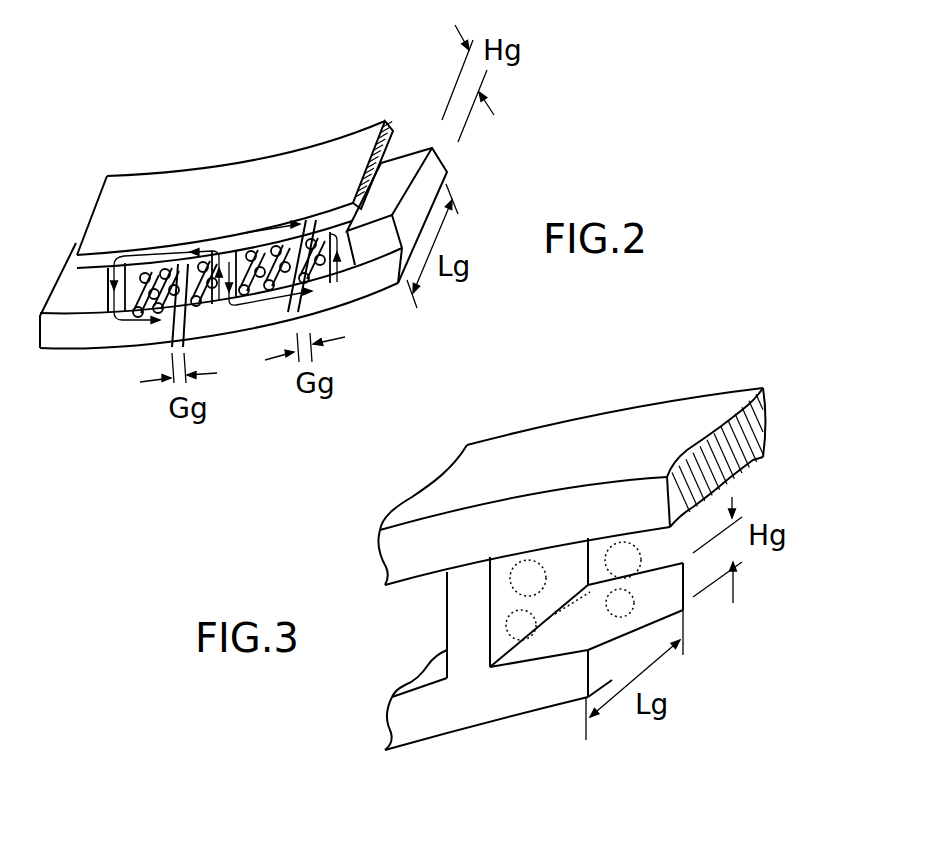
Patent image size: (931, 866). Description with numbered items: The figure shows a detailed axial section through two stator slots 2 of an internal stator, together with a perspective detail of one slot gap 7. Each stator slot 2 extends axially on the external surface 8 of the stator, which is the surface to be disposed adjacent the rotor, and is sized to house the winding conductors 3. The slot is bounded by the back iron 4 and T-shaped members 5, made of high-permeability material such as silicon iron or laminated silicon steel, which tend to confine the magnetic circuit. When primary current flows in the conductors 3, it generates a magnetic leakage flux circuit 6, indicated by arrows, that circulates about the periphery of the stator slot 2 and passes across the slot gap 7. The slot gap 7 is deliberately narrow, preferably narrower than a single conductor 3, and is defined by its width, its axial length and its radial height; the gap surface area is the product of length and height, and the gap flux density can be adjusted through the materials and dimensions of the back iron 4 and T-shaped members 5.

In FIG. 2, the stator slot 2 is at (157, 257).
In FIG. 3, the winding conductor 3 is at (537, 565).
In FIG. 2, the back iron 4 is at (302, 167).
In FIG. 3, the back iron 4 is at (533, 502).
In FIG. 2, the T-shaped member 5 is at (73, 334).
In FIG. 3, the T-shaped member 5 is at (480, 693).
In FIG. 2, the magnetic leakage flux circuit 6 is at (203, 253).
In FIG. 2, the slot gap 7 is at (180, 352).
In FIG. 2, the surface 8 is at (343, 308).
In FIG. 3, the surface 8 is at (462, 728).